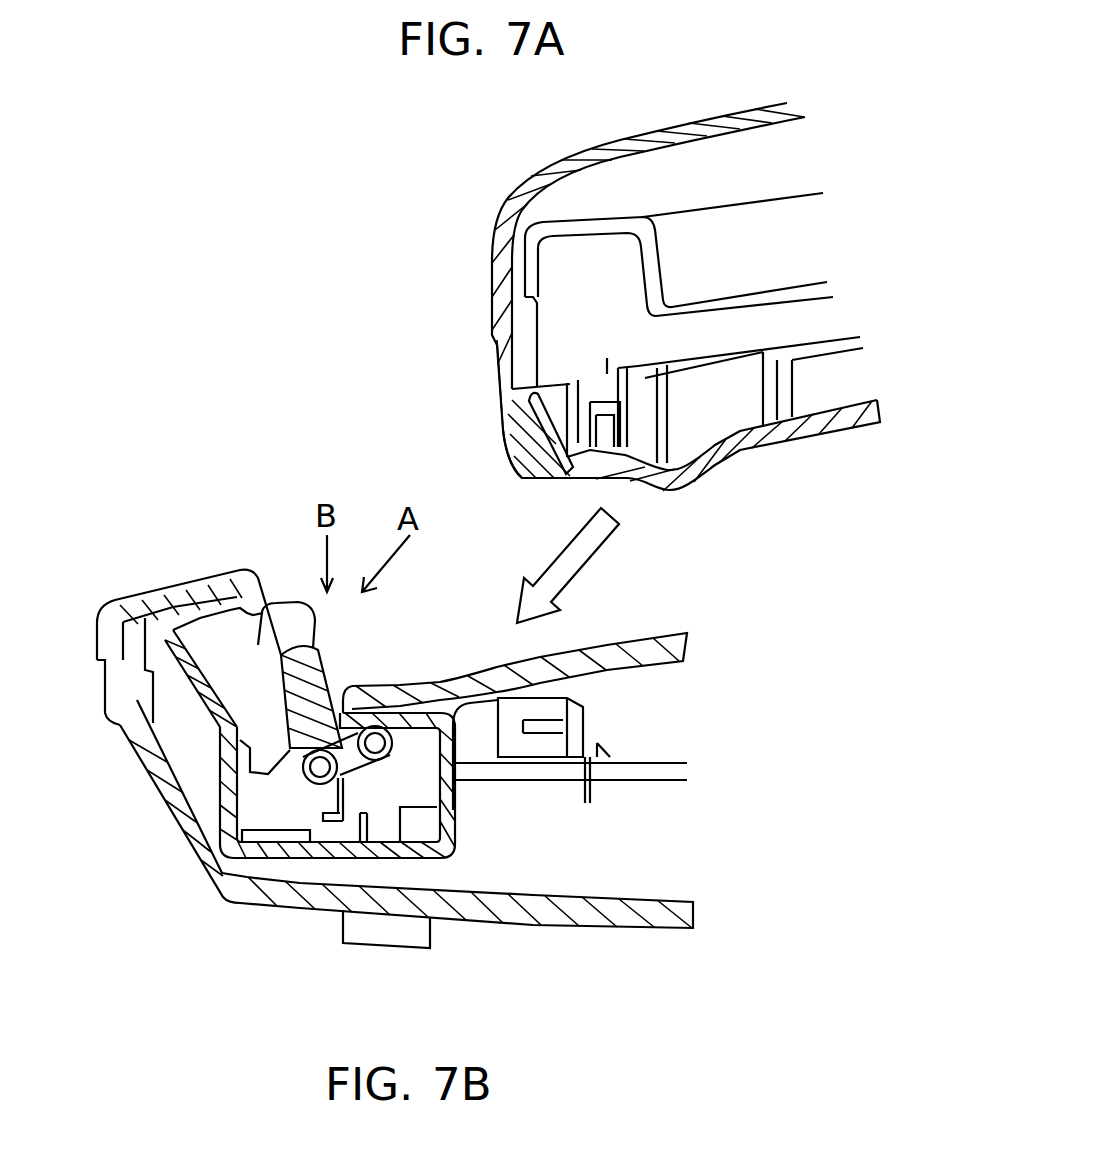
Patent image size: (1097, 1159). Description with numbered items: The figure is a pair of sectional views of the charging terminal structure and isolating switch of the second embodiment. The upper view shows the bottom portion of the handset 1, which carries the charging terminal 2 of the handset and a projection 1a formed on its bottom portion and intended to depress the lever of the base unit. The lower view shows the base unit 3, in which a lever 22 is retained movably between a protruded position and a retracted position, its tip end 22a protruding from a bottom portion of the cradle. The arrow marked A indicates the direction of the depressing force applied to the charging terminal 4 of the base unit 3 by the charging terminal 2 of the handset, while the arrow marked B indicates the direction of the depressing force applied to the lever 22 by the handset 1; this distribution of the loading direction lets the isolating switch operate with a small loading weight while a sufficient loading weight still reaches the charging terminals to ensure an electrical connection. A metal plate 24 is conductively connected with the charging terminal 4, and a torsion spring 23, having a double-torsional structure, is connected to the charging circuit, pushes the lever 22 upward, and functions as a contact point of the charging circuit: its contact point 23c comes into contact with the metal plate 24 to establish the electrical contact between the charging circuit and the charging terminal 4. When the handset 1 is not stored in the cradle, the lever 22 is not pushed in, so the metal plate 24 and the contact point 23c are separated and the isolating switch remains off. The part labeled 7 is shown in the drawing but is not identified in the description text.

In FIG. 7A, the handset 1 is at (622, 138).
In FIG. 7A, the projection 1a is at (519, 481).
In FIG. 7A, the charging terminal of the handset 2 is at (508, 397).
In FIG. 7B, the base unit 3 is at (152, 592).
In FIG. 7B, the charging terminal of the base unit 4 is at (268, 612).
In FIG. 7B, the shaft 7 is at (657, 762).
In FIG. 7B, the lever 22 is at (247, 752).
In FIG. 7B, the tip end of the lever 22a is at (303, 677).
In FIG. 7B, the torsion spring 23 is at (338, 805).
In FIG. 7B, the contact point 23c is at (327, 820).
In FIG. 7B, the metal plate 24 is at (370, 830).